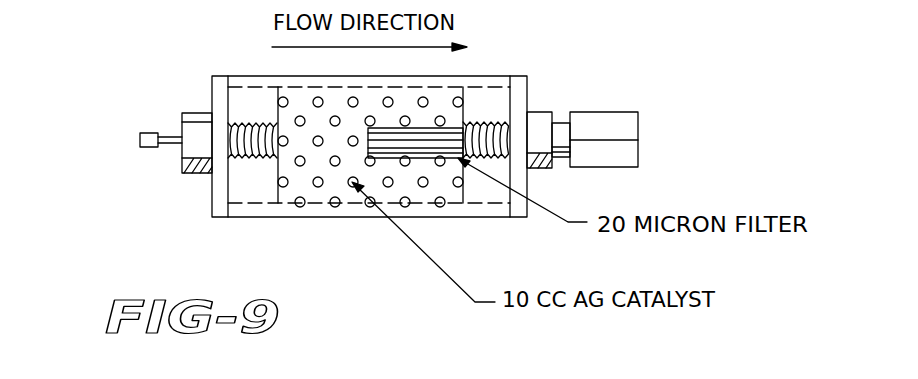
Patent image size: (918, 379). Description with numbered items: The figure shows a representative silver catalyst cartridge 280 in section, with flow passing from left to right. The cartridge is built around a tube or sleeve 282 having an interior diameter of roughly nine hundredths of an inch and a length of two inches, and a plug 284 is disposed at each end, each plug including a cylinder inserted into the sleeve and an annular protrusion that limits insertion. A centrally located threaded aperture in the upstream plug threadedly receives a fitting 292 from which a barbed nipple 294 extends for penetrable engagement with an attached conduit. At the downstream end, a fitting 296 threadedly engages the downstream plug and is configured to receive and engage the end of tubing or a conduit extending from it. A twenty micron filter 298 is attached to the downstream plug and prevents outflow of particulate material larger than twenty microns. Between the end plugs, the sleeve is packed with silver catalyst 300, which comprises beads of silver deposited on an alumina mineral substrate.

The silver catalyst cartridge 280 is at (588, 97).
The sleeve 282 is at (472, 82).
The plug 284 is at (210, 102).
The fitting 292 is at (188, 173).
The barbed nipple 294 is at (147, 133).
The fitting 296 is at (612, 168).
The twenty micron filter 298 is at (435, 156).
The silver catalyst 300 is at (313, 172).